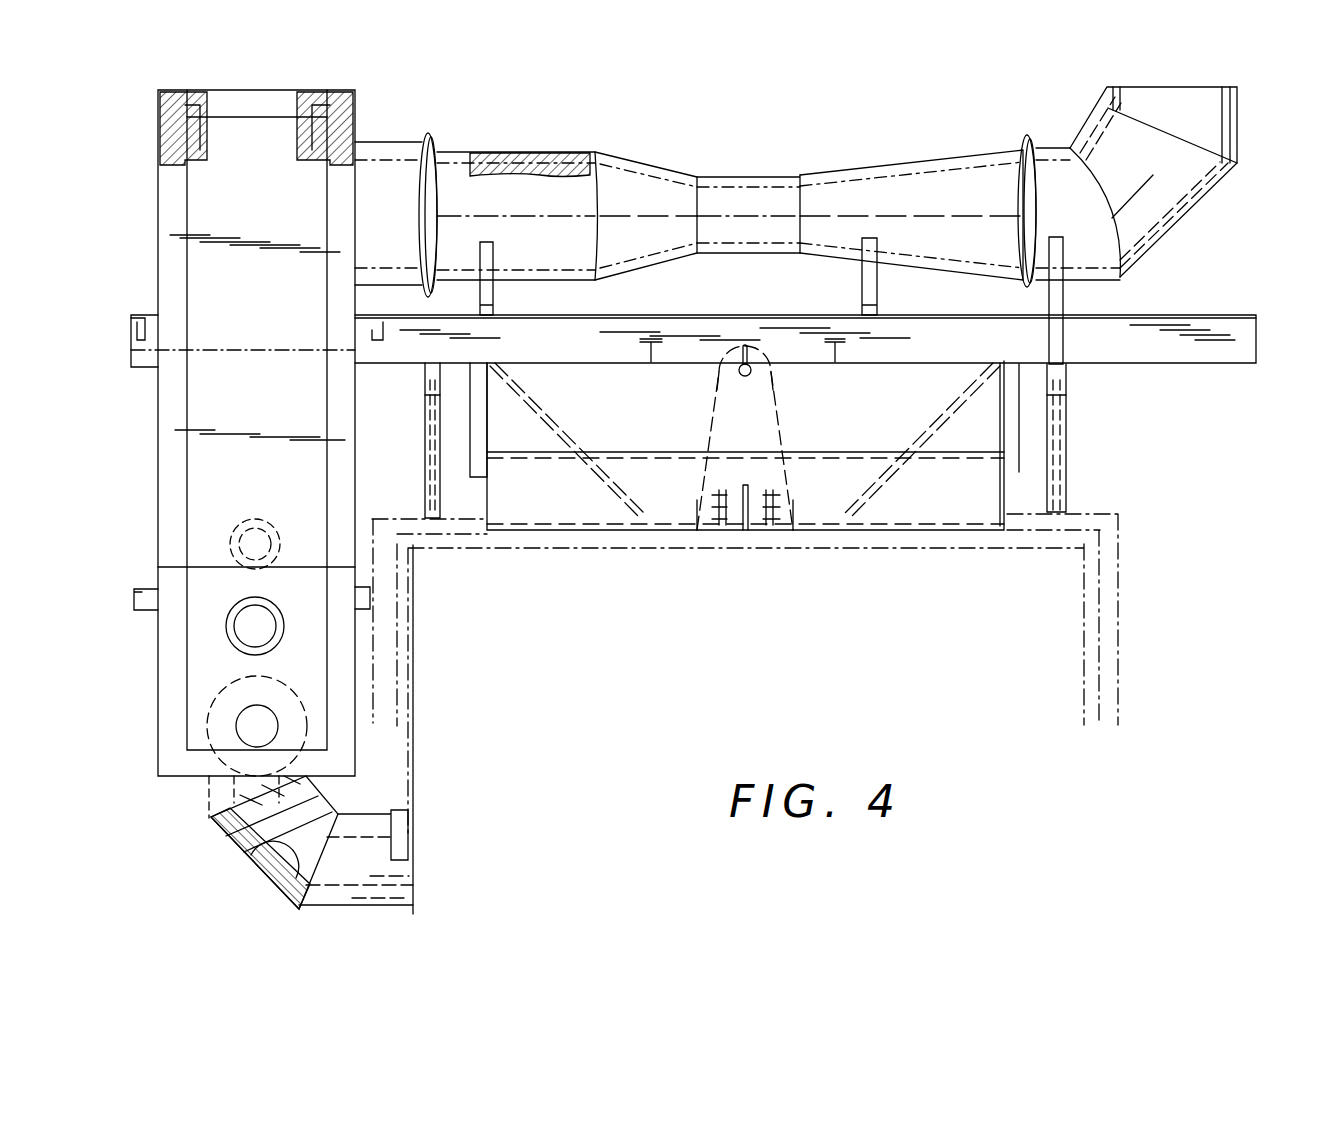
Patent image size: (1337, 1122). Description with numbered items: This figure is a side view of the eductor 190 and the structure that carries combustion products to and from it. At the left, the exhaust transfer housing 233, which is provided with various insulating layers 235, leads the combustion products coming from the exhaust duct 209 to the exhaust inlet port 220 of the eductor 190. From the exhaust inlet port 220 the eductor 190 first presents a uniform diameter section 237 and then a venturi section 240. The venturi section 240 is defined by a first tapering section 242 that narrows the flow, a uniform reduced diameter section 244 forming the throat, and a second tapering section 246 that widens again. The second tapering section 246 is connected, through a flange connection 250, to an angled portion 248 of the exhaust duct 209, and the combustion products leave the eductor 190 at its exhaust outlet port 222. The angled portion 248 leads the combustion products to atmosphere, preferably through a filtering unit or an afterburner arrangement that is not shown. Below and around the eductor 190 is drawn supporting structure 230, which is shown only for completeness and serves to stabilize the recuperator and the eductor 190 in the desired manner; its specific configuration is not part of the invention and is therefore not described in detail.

The eductor 190 is at (882, 118).
The exhaust duct 209 is at (1241, 108).
The exhaust inlet port 220 is at (437, 148).
The exhaust outlet port 222 is at (1037, 147).
The supporting structure 230 is at (1070, 368).
The exhaust transfer housing 233 is at (303, 86).
The insulating layers 235 is at (347, 135).
The uniform diameter section 237 is at (535, 278).
The venturi section 240 is at (762, 165).
The first tapering section 242 is at (640, 262).
The uniform reduced diameter section 244 is at (750, 262).
The second tapering section 246 is at (922, 266).
The angled portion 248 is at (1206, 196).
The flange connection 250 is at (1022, 140).